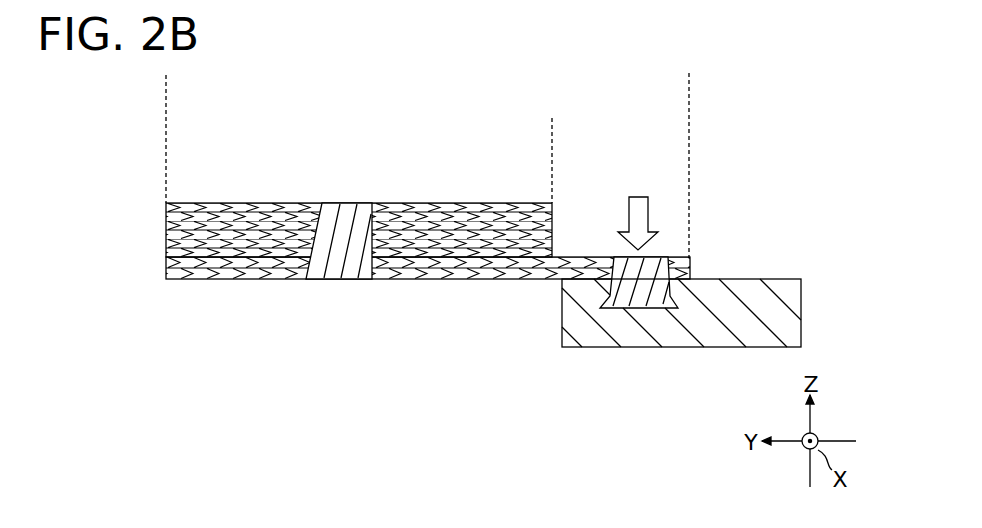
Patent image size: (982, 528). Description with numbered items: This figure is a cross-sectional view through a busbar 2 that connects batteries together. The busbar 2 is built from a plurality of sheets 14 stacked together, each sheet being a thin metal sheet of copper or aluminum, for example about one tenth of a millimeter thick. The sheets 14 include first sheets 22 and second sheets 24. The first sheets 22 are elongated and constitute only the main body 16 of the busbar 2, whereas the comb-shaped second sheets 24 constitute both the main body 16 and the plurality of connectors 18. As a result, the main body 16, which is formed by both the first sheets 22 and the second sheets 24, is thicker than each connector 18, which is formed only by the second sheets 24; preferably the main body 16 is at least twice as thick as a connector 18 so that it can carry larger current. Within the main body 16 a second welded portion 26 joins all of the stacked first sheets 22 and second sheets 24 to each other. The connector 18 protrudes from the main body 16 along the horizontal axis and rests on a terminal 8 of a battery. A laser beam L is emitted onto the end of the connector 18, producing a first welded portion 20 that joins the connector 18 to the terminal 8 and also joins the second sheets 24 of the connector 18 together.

The busbar 2 is at (166, 91).
The main body 16 is at (552, 138).
The connector 18 is at (556, 138).
The sheet 14 is at (104, 203).
The first sheet 22 is at (166, 220).
The second sheet 24 is at (166, 265).
The second welded portion 26 is at (352, 202).
The first welded portion 20 is at (657, 257).
The terminal 8 is at (784, 279).
The laser beam L is at (650, 212).